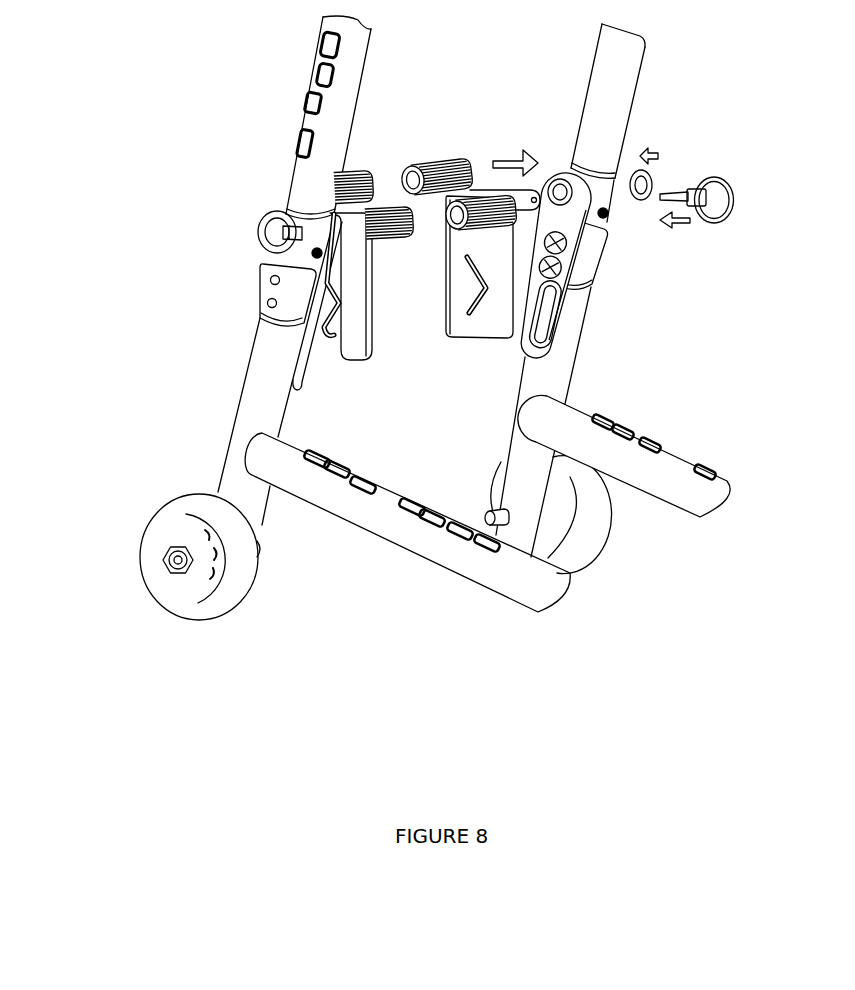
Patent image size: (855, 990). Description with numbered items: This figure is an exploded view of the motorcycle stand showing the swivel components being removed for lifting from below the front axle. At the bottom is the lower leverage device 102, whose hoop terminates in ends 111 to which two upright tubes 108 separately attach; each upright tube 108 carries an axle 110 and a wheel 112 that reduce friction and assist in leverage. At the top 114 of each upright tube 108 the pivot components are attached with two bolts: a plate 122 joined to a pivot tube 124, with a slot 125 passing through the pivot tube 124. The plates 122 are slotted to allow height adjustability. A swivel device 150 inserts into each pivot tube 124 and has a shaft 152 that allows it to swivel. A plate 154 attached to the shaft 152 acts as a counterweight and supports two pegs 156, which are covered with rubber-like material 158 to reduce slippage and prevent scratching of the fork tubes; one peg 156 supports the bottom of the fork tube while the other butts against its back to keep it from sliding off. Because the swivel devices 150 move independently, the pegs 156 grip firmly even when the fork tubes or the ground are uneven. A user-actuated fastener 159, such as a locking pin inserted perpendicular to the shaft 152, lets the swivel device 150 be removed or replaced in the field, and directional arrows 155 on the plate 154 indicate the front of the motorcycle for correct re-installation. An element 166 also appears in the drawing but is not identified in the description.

The lower leverage device 102 is at (452, 563).
The upright tube 108 is at (250, 393).
The axle 110 is at (167, 562).
The ends of the hoop 111 is at (245, 453).
The wheel 112 is at (178, 603).
The top of upright tube 114 is at (263, 288).
The plate 122 is at (298, 373).
The pivot tube 124 is at (565, 180).
The slot 125 is at (512, 190).
The swivel device 150 is at (432, 204).
The shaft 152 is at (478, 193).
The plate 154 is at (351, 294).
The directional arrows 155 is at (467, 315).
The peg 156 is at (388, 210).
The rubber-like material 158 is at (258, 215).
The user-actuated fastener 159 is at (695, 215).
The handle grip 166 is at (322, 62).